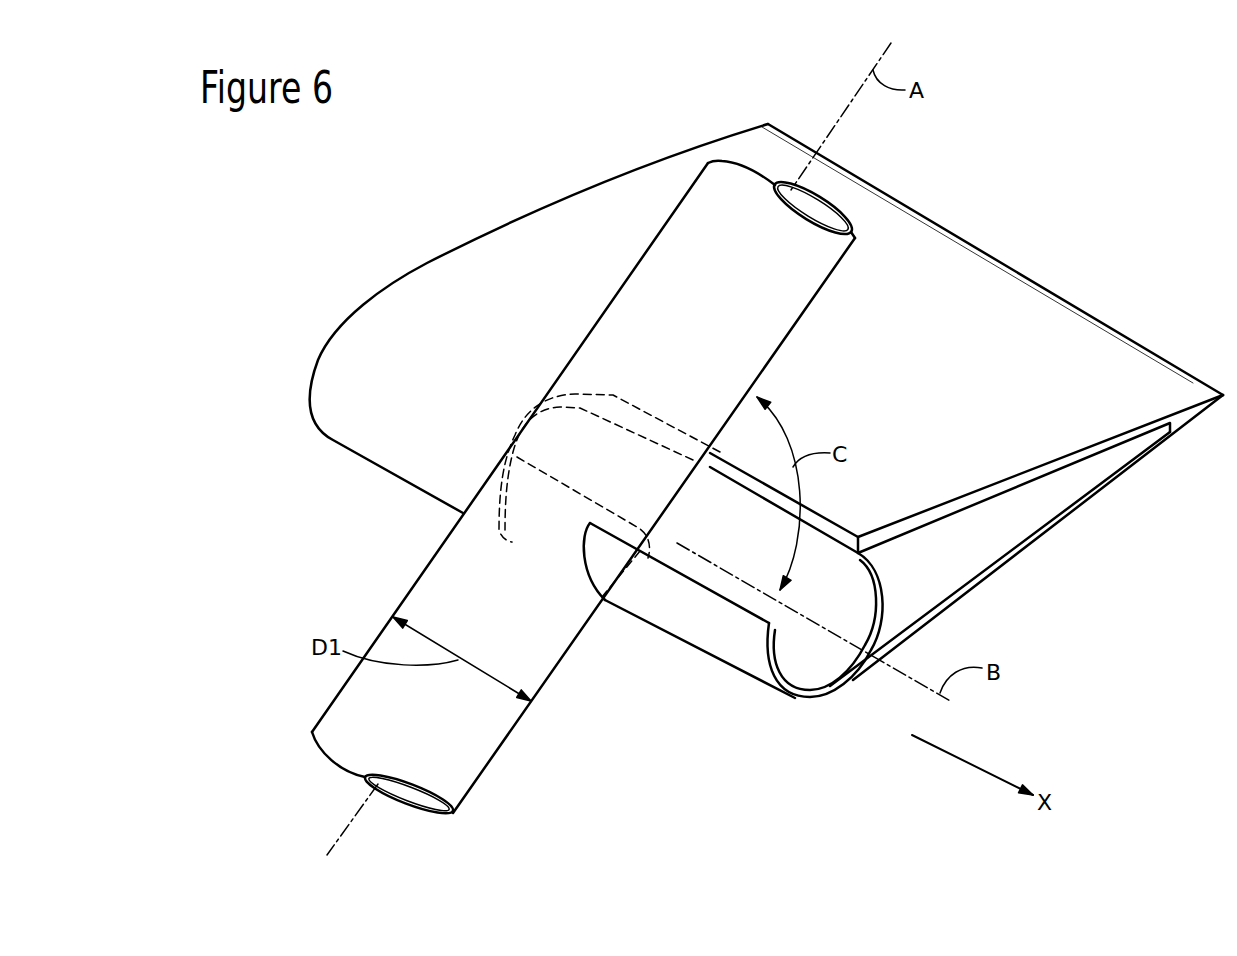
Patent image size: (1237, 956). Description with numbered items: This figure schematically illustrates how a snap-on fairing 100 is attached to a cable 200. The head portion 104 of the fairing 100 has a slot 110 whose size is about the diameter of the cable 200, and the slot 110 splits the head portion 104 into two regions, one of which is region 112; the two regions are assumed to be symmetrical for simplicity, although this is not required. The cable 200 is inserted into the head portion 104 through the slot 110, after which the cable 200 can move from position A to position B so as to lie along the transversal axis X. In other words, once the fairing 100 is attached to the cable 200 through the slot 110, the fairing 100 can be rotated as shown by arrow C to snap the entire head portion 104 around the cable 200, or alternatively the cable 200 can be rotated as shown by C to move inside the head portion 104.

The fairing 100 is at (765, 64).
The head portion 104 is at (370, 323).
The slot 110 is at (533, 519).
The region 112 is at (695, 623).
The cable 200 is at (465, 763).